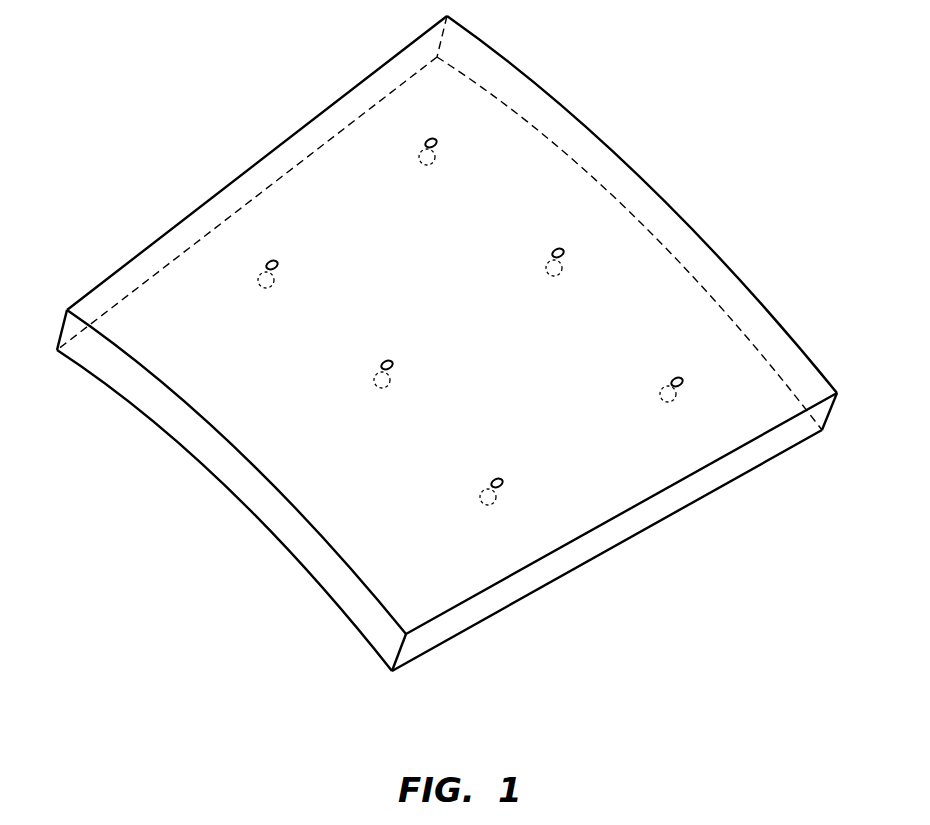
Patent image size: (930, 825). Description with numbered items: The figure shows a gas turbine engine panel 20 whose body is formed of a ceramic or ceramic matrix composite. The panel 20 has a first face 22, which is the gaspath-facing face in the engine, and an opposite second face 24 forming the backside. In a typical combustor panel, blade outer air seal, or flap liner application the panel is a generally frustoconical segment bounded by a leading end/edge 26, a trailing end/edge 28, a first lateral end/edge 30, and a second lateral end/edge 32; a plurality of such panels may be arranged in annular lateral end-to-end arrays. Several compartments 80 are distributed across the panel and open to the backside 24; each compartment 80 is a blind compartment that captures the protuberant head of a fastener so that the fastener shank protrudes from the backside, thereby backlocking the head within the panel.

The panel 20 is at (447, 343).
The first face 22 is at (614, 532).
The second face 24 is at (723, 345).
The leading end/edge 26 is at (352, 593).
The trailing end/edge 28 is at (668, 232).
The first lateral end/edge 30 is at (700, 485).
The second lateral end/edge 32 is at (261, 182).
The compartment 80 is at (437, 143).